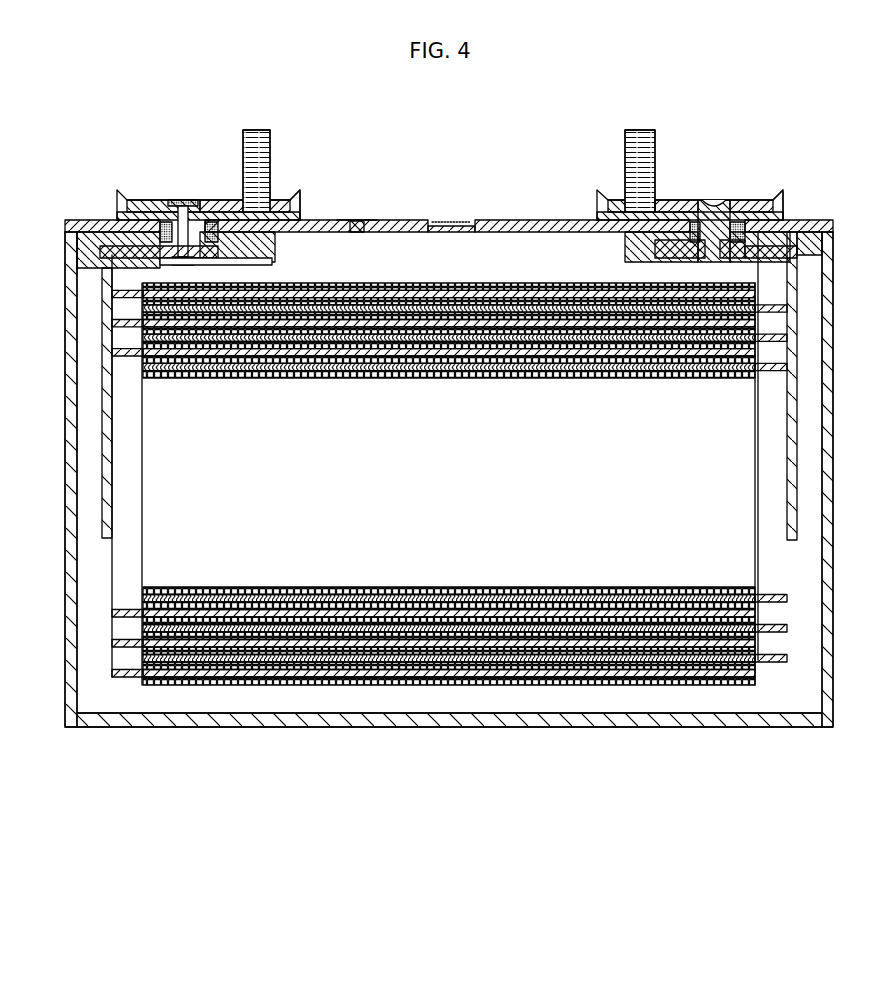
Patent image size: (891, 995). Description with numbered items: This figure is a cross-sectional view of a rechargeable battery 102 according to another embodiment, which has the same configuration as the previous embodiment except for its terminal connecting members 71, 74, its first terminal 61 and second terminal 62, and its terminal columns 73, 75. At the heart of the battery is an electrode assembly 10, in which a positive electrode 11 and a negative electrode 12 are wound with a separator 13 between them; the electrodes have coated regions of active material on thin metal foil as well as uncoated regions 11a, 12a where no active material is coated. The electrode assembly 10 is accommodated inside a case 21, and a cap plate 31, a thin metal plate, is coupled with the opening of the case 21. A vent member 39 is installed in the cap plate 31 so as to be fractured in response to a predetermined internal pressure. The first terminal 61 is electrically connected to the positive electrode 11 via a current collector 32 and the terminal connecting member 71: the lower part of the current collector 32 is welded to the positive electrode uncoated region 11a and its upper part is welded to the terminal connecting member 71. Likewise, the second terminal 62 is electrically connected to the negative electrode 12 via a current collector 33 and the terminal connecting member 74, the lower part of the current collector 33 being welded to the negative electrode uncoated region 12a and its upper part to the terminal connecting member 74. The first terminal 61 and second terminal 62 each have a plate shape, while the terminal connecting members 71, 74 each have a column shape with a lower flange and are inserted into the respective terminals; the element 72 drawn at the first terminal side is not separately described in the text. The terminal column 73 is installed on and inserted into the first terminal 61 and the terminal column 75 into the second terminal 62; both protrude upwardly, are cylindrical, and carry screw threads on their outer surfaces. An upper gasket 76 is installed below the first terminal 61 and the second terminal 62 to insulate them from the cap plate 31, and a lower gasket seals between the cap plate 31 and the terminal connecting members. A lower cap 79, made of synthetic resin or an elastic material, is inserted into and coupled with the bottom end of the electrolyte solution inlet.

The rechargeable battery 102 is at (424, 107).
The electrode assembly 10 is at (455, 533).
The positive electrode 11 is at (227, 678).
The positive electrode uncoated region 11a is at (128, 678).
The negative electrode 12 is at (700, 662).
The negative electrode uncoated region 12a is at (780, 660).
The separator 13 is at (400, 662).
The case 21 is at (828, 431).
The cap plate 31 is at (518, 221).
The current collector 32 is at (105, 468).
The current collector 33 is at (798, 488).
The vent member 39 is at (464, 222).
The first terminal 61 is at (142, 200).
The second terminal 62 is at (680, 201).
The terminal connecting member 71 is at (217, 200).
The first rivet terminal 72 is at (181, 201).
The terminal column 73 is at (258, 133).
The terminal connecting member 74 is at (713, 205).
The terminal column 75 is at (633, 132).
The upper gasket 76 is at (300, 195).
The lower cap 79 is at (178, 262).